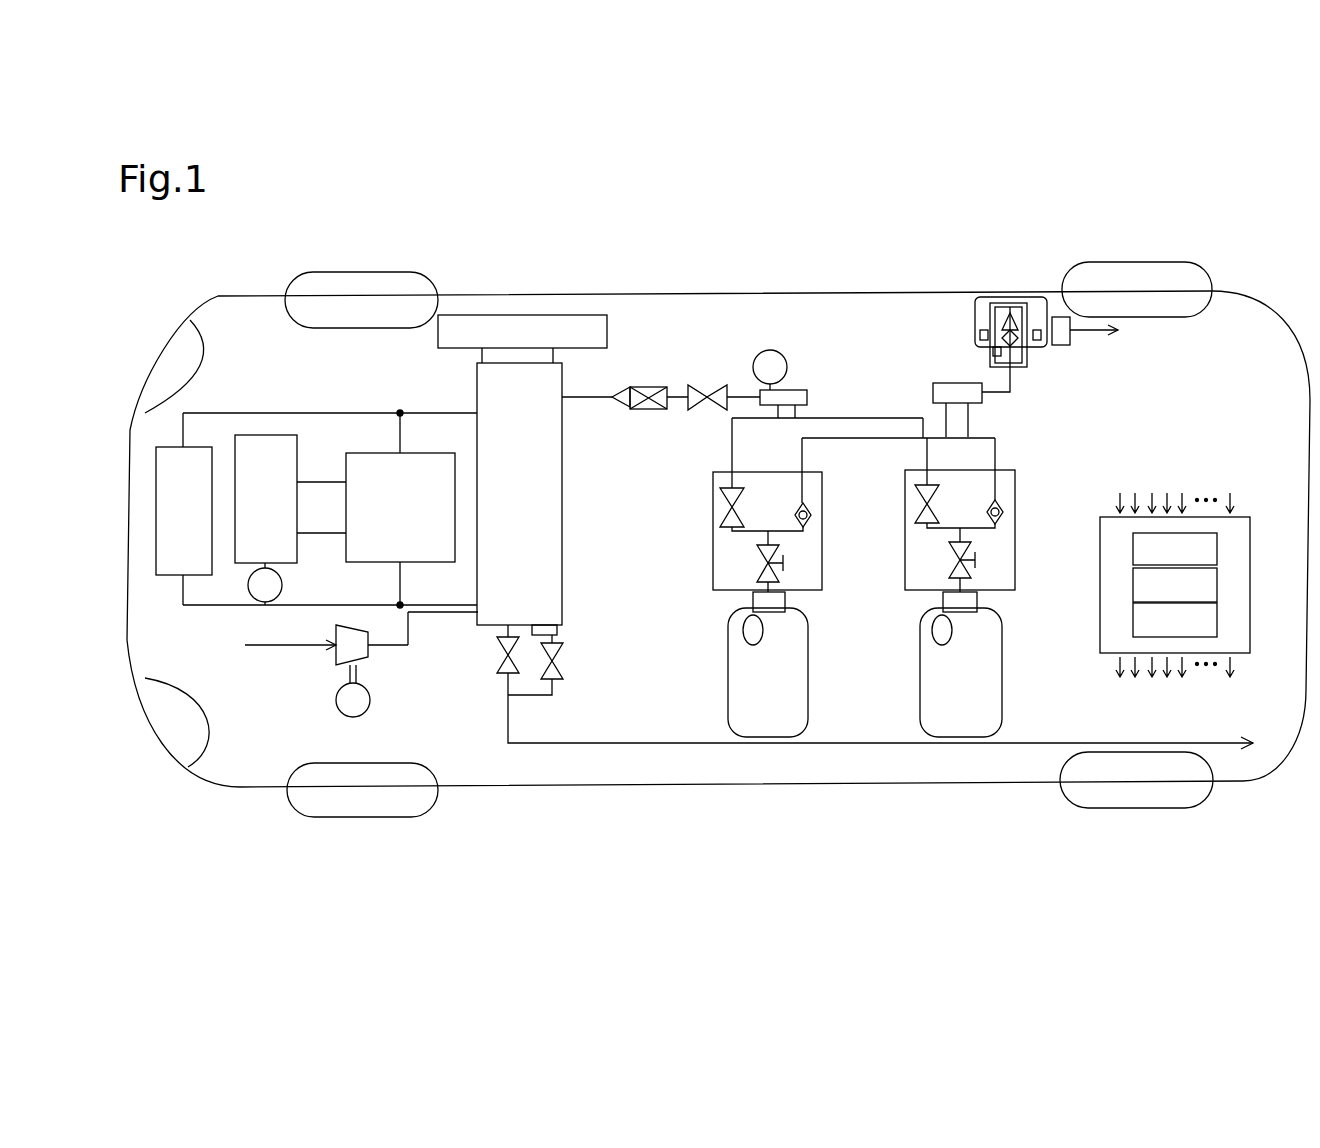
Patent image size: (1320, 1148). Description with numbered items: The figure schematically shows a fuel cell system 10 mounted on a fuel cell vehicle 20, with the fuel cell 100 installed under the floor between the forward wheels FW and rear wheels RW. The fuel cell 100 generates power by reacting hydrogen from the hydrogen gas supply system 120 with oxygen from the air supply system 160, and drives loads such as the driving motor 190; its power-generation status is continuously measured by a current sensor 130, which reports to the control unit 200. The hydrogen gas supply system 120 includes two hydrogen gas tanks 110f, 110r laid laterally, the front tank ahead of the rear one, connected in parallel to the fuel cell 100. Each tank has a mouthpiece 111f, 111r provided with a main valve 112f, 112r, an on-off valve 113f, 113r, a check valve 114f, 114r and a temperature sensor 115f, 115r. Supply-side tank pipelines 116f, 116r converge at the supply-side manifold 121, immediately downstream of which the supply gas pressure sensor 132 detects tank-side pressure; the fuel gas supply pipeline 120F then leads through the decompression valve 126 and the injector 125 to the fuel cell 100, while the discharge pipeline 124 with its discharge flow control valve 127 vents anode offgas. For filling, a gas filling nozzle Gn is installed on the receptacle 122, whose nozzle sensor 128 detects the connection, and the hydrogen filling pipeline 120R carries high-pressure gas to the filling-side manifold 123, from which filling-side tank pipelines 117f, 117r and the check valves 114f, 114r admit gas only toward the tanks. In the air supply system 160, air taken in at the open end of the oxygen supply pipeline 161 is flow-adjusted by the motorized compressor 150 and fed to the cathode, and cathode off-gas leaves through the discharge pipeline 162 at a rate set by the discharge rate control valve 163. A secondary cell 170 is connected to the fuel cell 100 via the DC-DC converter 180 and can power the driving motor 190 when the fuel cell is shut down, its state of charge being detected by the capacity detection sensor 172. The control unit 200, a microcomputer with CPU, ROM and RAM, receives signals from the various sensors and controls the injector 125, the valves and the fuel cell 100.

The fuel cell system 10 is at (718, 519).
The fuel cell vehicle 20 is at (625, 293).
The fuel cell 100 is at (475, 403).
The hydrogen gas tank 110f is at (727, 664).
The hydrogen gas tank 110r is at (920, 664).
The mouthpiece 111f is at (754, 544).
The mouthpiece 111r is at (961, 545).
The main valve 112f is at (757, 575).
The main valve 112r is at (913, 563).
The on-off valve 113f is at (722, 518).
The on-off valve 113r is at (917, 518).
The check valve 114f is at (815, 502).
The check valve 114r is at (1005, 516).
The temperature sensor 115f is at (742, 633).
The temperature sensor 115r is at (932, 638).
The supply-side tank pipeline 116f is at (733, 450).
The supply-side tank pipeline 116r is at (925, 450).
The filling-side tank pipeline 117f is at (833, 437).
The filling-side tank pipeline 117r is at (1000, 443).
The hydrogen gas supply system 120 is at (813, 312).
The fuel gas supply pipeline 120F is at (587, 402).
The hydrogen filling pipeline 120R is at (987, 372).
The supply-side manifold 121 is at (805, 385).
The receptacle 122 is at (1035, 348).
The filling-side manifold 123 is at (933, 392).
The discharge pipeline 124 is at (563, 642).
The injector 125 is at (647, 384).
The decompression valve 126 is at (702, 384).
The discharge flow control valve 127 is at (560, 667).
The nozzle sensor 128 is at (1110, 262).
The current sensor 130 is at (515, 313).
The supply gas pressure sensor 132 is at (762, 347).
The compressor 150 is at (333, 655).
The air supply system 160 is at (361, 674).
The oxygen supply pipeline 161 is at (245, 640).
The discharge pipeline 162 is at (560, 747).
The discharge rate control valve 163 is at (497, 668).
The secondary cell 170 is at (266, 434).
The capacity detection sensor 172 is at (283, 583).
The DC-DC converter 180 is at (377, 452).
The driving motor 190 is at (167, 446).
The control unit 200 is at (1252, 515).
The forward wheels FW is at (415, 272).
The rear wheels RW is at (1185, 262).
The gas filling nozzle Gn is at (1053, 307).